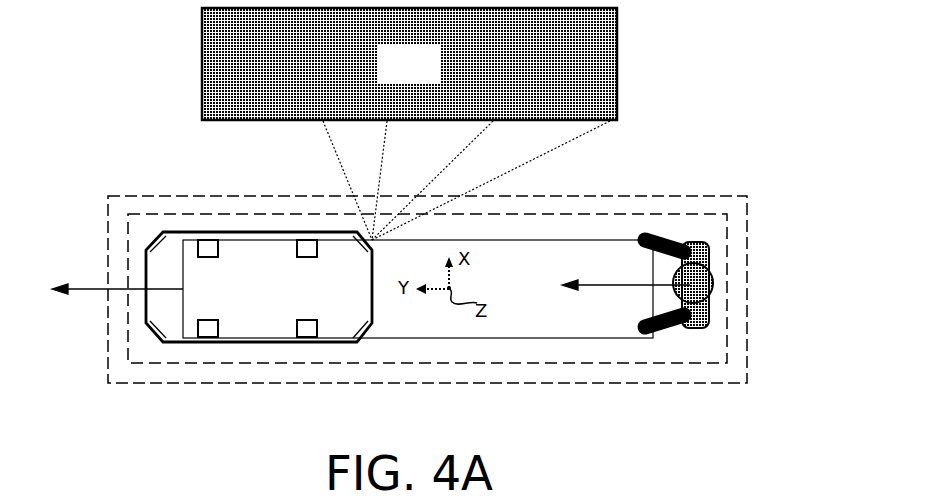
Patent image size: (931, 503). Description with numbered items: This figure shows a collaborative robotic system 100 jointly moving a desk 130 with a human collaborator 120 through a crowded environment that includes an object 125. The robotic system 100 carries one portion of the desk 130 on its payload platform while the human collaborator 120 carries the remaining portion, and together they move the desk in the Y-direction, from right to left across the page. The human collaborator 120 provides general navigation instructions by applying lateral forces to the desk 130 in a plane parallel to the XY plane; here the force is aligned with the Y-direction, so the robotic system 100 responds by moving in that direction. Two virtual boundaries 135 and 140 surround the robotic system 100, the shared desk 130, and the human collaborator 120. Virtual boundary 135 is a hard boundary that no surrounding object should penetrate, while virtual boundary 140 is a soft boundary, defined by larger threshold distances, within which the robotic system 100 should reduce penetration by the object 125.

The collaborative robotic system 100 is at (146, 308).
The human collaborator 120 is at (708, 308).
The object 125 is at (409, 124).
The desk 130 is at (587, 340).
The virtual boundary 135 is at (648, 214).
The virtual boundary 140 is at (705, 196).